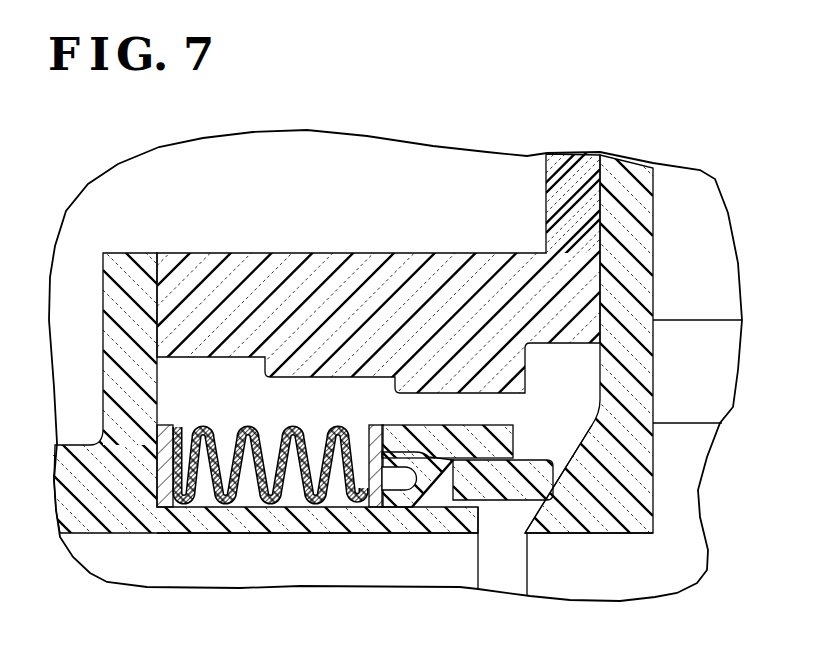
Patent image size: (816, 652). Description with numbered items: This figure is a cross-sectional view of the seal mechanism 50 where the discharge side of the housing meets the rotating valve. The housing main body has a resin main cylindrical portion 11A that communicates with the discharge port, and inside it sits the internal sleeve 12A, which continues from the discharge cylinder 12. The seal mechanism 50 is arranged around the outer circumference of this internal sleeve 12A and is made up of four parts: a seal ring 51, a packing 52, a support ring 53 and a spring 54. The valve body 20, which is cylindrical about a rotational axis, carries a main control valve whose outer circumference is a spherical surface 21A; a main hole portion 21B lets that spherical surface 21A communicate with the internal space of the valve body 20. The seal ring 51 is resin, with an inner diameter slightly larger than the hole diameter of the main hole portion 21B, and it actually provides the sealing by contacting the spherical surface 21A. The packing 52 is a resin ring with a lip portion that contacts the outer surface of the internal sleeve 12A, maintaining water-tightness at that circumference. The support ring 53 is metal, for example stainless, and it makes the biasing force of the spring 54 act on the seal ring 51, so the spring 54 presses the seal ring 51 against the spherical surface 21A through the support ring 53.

The main cylindrical portion 11A is at (255, 252).
The discharge cylinder 12 is at (103, 311).
The internal sleeve 12A is at (347, 537).
The valve body 20 is at (655, 237).
The spherical surface 21A is at (584, 438).
The main hole portion 21B is at (555, 535).
The seal mechanism 50 is at (524, 407).
The seal ring 51 is at (497, 500).
The packing 52 is at (438, 510).
The support ring 53 is at (428, 425).
The spring 54 is at (221, 434).